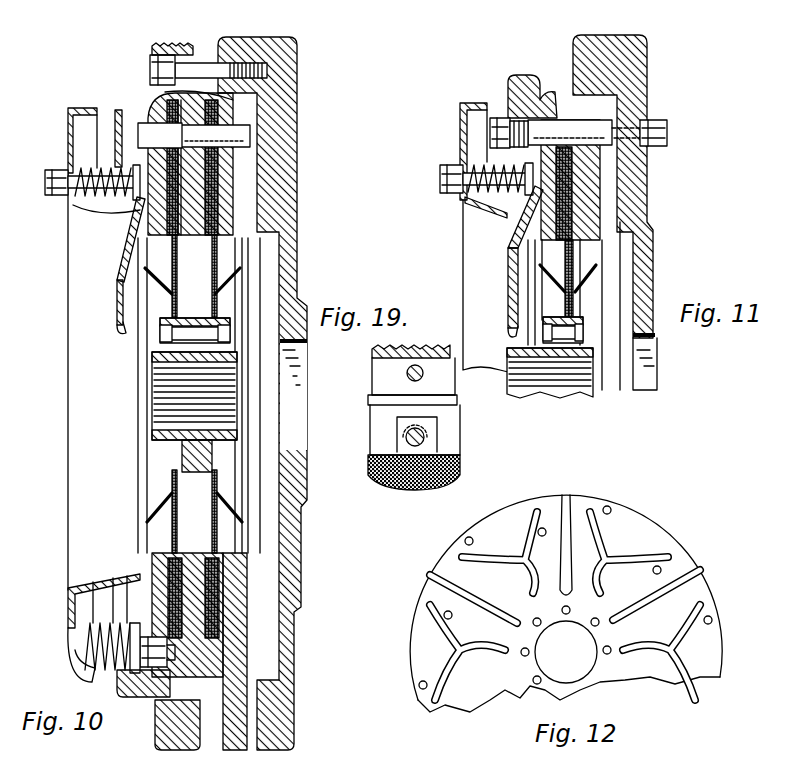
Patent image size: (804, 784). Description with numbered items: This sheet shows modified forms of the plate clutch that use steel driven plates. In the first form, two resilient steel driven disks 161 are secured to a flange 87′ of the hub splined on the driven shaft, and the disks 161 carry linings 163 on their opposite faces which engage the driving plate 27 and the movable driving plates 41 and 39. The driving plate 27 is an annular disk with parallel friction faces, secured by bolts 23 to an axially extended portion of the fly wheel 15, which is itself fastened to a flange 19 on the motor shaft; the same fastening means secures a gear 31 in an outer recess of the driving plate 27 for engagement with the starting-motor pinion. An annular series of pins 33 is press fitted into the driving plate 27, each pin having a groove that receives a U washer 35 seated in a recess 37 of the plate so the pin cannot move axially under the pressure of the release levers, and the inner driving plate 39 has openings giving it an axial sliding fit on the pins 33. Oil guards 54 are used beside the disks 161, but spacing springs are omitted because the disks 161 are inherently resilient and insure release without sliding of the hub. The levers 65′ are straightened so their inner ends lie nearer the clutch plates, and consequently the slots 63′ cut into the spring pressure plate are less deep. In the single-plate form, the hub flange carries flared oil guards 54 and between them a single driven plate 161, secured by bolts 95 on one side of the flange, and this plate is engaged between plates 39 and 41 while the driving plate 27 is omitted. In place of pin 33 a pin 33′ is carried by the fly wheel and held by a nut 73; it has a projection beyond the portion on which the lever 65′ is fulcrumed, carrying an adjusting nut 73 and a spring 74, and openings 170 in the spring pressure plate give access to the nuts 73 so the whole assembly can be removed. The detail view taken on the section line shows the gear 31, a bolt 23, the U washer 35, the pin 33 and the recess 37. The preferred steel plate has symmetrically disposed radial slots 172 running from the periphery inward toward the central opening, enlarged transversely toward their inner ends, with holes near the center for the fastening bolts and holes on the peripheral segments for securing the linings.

In FIG. 10, the fly wheel 15 is at (303, 522).
In FIG. 10, the flange 19 is at (183, 25).
In FIG. 10, the bolts 23 is at (205, 68).
In FIG. 19, the bolts 23 is at (407, 374).
In FIG. 10, the driving plate 27 is at (185, 100).
In FIG. 10, the gear 31 is at (166, 42).
In FIG. 19, the gear 31 is at (420, 345).
In FIG. 10, the pins 33 is at (248, 132).
In FIG. 19, the pins 33 is at (424, 437).
In FIG. 19, the U washer 35 is at (399, 436).
In FIG. 19, the recess 37 is at (460, 450).
In FIG. 10, the inner driving plate 39 is at (238, 170).
In FIG. 11, the inner driving plate 39 is at (600, 186).
In FIG. 10, the movable driving plate 41 is at (130, 206).
In FIG. 11, the movable driving plate 41 is at (545, 93).
In FIG. 10, the oil guards 54 is at (175, 488).
In FIG. 11, the oil guards 54 is at (560, 285).
In FIG. 10, the slots 63′ is at (135, 215).
In FIG. 10, the levers 65′ is at (118, 310).
In FIG. 11, the levers 65′ is at (508, 270).
In FIG. 11, the nut 73 is at (499, 117).
In FIG. 11, the spring 74 is at (517, 120).
In FIG. 10, the flange 87′ is at (176, 347).
In FIG. 11, the bolts 95 is at (545, 335).
In FIG. 10, the driven disks 161 is at (175, 256).
In FIG. 11, the driven disks 161 is at (573, 256).
In FIG. 12, the driven disks 161 is at (502, 520).
In FIG. 10, the linings 163 is at (221, 190).
In FIG. 11, the openings 170 is at (462, 118).
In FIG. 12, the radial slots 172 is at (570, 510).
In FIG. 11, the pin 33′ is at (566, 126).